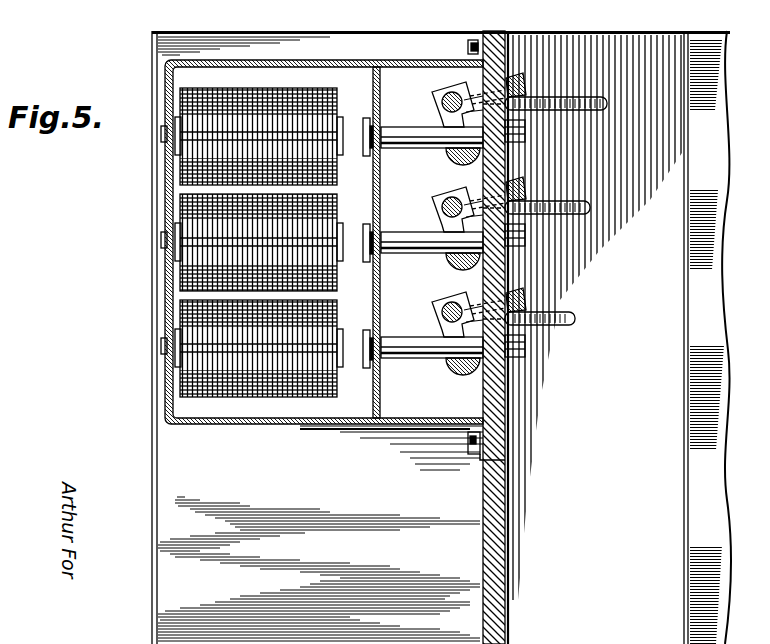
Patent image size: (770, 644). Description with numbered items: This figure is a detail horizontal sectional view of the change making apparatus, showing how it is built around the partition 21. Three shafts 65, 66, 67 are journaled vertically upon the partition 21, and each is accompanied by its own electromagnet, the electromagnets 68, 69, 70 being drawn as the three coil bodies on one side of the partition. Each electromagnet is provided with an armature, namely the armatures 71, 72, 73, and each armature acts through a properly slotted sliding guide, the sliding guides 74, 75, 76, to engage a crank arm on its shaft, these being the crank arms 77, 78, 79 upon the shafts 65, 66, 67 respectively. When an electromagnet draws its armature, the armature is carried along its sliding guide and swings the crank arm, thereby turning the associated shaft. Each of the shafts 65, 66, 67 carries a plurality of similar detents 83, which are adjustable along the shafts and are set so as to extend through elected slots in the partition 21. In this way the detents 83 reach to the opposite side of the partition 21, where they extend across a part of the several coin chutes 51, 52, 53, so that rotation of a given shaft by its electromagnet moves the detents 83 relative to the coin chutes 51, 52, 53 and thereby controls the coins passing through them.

The partition 21 is at (498, 616).
The coin chute 51 is at (575, 324).
The coin chute 52 is at (590, 214).
The coin chute 53 is at (610, 104).
The shaft 65 is at (445, 306).
The shaft 66 is at (440, 208).
The shaft 67 is at (438, 101).
The electromagnet 68 is at (198, 342).
The electromagnet 69 is at (205, 233).
The electromagnet 70 is at (188, 134).
The armature 71 is at (366, 331).
The armature 72 is at (366, 260).
The armature 73 is at (365, 120).
The sliding guide 74 is at (388, 361).
The sliding guide 75 is at (418, 222).
The sliding guide 76 is at (386, 147).
The crank arm 77 is at (448, 364).
The crank arm 78 is at (448, 256).
The crank arm 79 is at (452, 150).
The detent 83 is at (526, 85).